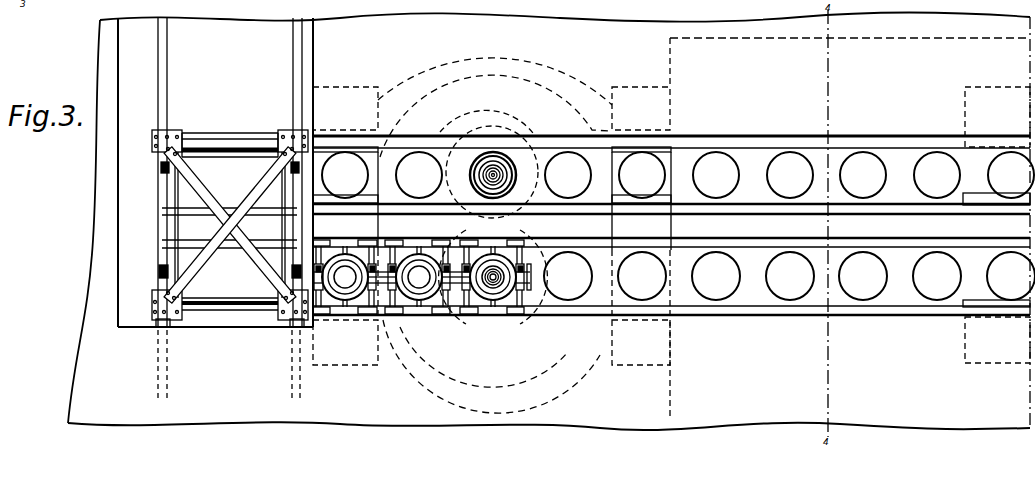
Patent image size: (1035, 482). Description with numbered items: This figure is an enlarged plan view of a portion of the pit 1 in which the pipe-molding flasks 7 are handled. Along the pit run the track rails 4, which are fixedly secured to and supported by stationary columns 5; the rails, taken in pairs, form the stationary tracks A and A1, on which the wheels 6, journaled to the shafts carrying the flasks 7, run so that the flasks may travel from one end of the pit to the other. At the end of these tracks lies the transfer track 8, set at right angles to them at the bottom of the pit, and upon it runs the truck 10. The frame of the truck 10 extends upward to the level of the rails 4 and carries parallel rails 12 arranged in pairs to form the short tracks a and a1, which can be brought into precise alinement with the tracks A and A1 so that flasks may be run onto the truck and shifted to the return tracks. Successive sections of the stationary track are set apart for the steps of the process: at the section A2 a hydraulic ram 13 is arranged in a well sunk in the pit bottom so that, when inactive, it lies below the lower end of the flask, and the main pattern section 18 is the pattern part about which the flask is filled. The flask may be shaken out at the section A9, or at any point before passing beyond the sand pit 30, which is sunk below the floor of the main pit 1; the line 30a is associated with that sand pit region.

The pit 1 is at (337, 172).
The track rails 4 is at (459, 150).
The stationary columns 5 is at (363, 118).
The wheels 6 is at (367, 241).
The flasks 7 is at (422, 253).
The transfer track 8 is at (295, 39).
The truck 10 is at (230, 316).
The parallel rails 12 is at (215, 140).
The hydraulic ram 13 is at (547, 305).
The main pattern section 18 is at (497, 167).
The sand pit 30 is at (680, 64).
The swing path 30a is at (382, 153).
The track A is at (818, 279).
The track A1 is at (571, 249).
The track section A2 is at (490, 312).
The track section A9 is at (935, 332).
The short track a is at (230, 280).
The short track a1 is at (230, 214).